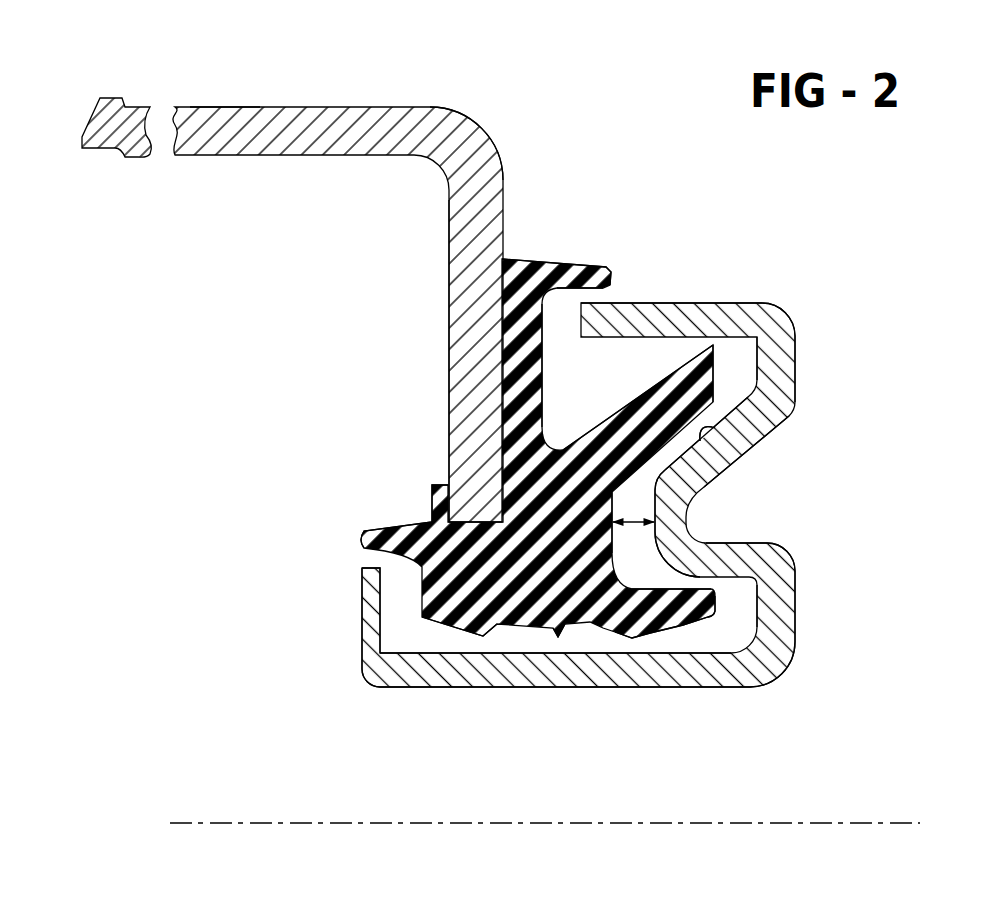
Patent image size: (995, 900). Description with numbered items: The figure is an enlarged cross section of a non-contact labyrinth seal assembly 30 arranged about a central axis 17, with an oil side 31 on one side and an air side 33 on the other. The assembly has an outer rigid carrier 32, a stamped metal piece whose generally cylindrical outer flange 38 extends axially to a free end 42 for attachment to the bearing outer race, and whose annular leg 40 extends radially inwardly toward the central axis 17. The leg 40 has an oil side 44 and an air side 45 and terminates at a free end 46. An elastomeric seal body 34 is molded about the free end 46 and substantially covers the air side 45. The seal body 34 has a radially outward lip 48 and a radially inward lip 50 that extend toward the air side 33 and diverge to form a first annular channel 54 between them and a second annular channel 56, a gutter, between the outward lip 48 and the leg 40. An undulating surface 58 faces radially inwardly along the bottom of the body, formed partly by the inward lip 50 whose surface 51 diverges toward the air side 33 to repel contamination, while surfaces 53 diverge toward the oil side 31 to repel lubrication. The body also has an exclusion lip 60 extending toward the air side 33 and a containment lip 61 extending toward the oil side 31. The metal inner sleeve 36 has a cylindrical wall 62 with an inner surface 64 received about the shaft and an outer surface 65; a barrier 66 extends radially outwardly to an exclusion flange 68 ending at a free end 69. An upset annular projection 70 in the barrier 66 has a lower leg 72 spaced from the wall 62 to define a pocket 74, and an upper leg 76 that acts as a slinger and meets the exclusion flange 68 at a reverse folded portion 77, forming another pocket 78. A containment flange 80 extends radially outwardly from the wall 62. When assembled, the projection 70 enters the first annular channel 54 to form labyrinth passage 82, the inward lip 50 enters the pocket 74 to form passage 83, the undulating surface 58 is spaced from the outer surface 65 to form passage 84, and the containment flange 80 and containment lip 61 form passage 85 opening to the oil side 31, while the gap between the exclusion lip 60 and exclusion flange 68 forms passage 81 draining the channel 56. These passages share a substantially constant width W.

The central axis 17 is at (267, 823).
The non-contact labyrinth seal assembly 30 is at (553, 75).
The oil side 31 is at (260, 340).
The outer rigid carrier 32 is at (264, 88).
The air side 33 is at (895, 385).
The elastomeric seal body 34 is at (390, 507).
The metal inner sleeve 36 is at (798, 297).
The outer flange 38 is at (204, 107).
The annular leg 40 is at (449, 323).
The free end 42 is at (88, 120).
The oil side of leg 44 is at (449, 410).
The air side of leg 45 is at (503, 193).
The free end of leg 46 is at (443, 520).
The radially outward lip 48 is at (742, 368).
The radially inward lip 50 is at (713, 590).
The radially inwardly facing surface 51 is at (704, 645).
The radially inwardly facing surfaces 53 is at (465, 634).
The first annular channel 54 is at (655, 545).
The second annular channel 56 is at (605, 360).
The undulating surface 58 is at (692, 583).
The exclusion lip 60 is at (600, 265).
The containment lip 61 is at (358, 540).
The cylindrical wall 62 is at (498, 688).
The inner surface 64 is at (666, 690).
The outer surface 65 is at (659, 643).
The barrier 66 is at (797, 608).
The exclusion flange 68 is at (697, 303).
The free end of exclusion flange 69 is at (575, 322).
The annular projection 70 is at (760, 453).
The lower leg 72 is at (730, 543).
The annular pocket 74 is at (744, 608).
The upper leg 76 is at (720, 430).
The reverse folded portion 77 is at (796, 335).
The annular pocket 78 is at (718, 352).
The containment flange 80 is at (362, 620).
The labyrinth passage 81 is at (597, 297).
The labyrinth passage 82 is at (733, 401).
The labyrinth passage 83 is at (642, 540).
The labyrinth passage 84 is at (750, 672).
The labyrinth passage 85 is at (393, 634).
The width W is at (630, 526).